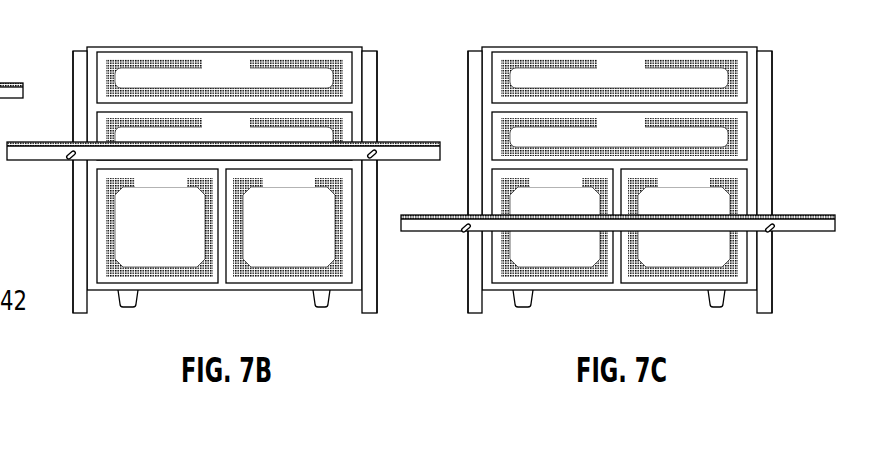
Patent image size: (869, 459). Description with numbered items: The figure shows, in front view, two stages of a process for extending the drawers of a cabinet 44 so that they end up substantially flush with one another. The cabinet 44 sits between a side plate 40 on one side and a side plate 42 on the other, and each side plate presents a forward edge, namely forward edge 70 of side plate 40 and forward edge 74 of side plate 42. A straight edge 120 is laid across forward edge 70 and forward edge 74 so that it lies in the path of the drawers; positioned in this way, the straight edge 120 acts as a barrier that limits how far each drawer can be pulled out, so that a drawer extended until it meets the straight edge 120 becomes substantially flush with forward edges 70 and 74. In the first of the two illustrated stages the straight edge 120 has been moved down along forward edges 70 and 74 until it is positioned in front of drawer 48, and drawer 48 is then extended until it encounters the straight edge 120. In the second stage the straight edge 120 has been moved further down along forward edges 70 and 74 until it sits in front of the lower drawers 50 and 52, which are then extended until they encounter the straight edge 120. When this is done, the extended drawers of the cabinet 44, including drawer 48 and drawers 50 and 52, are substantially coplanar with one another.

In FIG. 7B, the side plate 40 is at (73, 266).
In FIG. 7C, the side plate 40 is at (468, 266).
In FIG. 7B, the side plate 42 is at (378, 96).
In FIG. 7C, the side plate 42 is at (773, 97).
In FIG. 7B, the cabinet 44 is at (238, 47).
In FIG. 7C, the cabinet 44 is at (660, 47).
In FIG. 7B, the drawer 48 is at (176, 132).
In FIG. 7C, the drawer 50 is at (528, 204).
In FIG. 7C, the drawer 52 is at (707, 239).
In FIG. 7B, the forward edge 70 is at (80, 57).
In FIG. 7C, the forward edge 70 is at (475, 57).
In FIG. 7B, the forward edge 74 is at (372, 50).
In FIG. 7C, the forward edge 74 is at (765, 52).
In FIG. 7B, the straight edge 120 is at (38, 142).
In FIG. 7C, the straight edge 120 is at (793, 215).